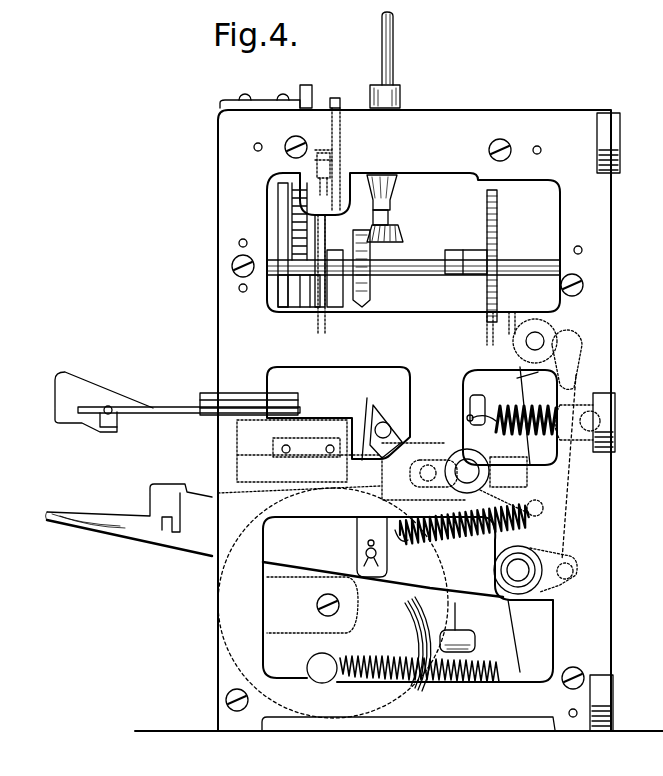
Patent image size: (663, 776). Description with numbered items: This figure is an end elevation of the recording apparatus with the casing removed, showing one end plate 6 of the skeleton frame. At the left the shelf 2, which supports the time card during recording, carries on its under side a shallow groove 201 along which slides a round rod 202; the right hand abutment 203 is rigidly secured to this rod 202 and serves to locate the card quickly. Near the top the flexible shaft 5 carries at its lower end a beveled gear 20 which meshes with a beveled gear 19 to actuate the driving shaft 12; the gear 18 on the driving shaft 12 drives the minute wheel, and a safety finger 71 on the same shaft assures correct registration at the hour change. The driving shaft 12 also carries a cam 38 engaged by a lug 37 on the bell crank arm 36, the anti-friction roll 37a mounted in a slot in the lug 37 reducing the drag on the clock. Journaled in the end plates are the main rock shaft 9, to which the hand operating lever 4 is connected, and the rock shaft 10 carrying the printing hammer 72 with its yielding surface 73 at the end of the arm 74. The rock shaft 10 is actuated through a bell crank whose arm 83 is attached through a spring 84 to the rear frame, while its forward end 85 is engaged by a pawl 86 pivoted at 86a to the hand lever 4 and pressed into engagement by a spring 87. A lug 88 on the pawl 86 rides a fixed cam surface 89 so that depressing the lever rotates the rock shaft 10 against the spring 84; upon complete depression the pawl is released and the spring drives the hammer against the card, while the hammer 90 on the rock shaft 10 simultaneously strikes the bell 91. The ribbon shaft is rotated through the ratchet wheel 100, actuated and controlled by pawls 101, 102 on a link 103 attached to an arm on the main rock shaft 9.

The shelf 2 is at (170, 413).
The hand operating lever 4 is at (201, 558).
The flexible shaft 5 is at (394, 41).
The end plate 6 is at (449, 118).
The main rock shaft 9 is at (535, 570).
The rock shaft 10 is at (467, 471).
The driving shaft 12 is at (518, 262).
The gear 18 is at (498, 223).
The beveled gear 19 is at (363, 308).
The beveled gear 20 is at (396, 232).
The bell crank arm 36 is at (338, 97).
The lug 37 is at (316, 157).
The anti-friction roll 37a is at (331, 166).
The cam 38 is at (311, 308).
The safety finger 71 is at (467, 250).
The hammer 72 is at (235, 452).
The yielding surface 73 is at (263, 404).
The arm 74 is at (333, 603).
The bell crank arm 83 is at (484, 399).
The spring 84 is at (526, 430).
The forward end of bell crank 85 is at (432, 440).
The pawl 86 is at (363, 420).
The pivot 86a is at (366, 560).
The spring 87 is at (458, 533).
The lug 88 is at (386, 418).
The cam surface 89 is at (356, 459).
The hammer 90 is at (466, 628).
The bell 91 is at (383, 626).
The ratchet wheel 100 is at (552, 326).
The pawl 101 is at (580, 352).
The pawl 102 is at (512, 358).
The link 103 is at (570, 475).
The groove 201 is at (110, 405).
The round rod 202 is at (106, 416).
The right hand abutment 203 is at (55, 397).